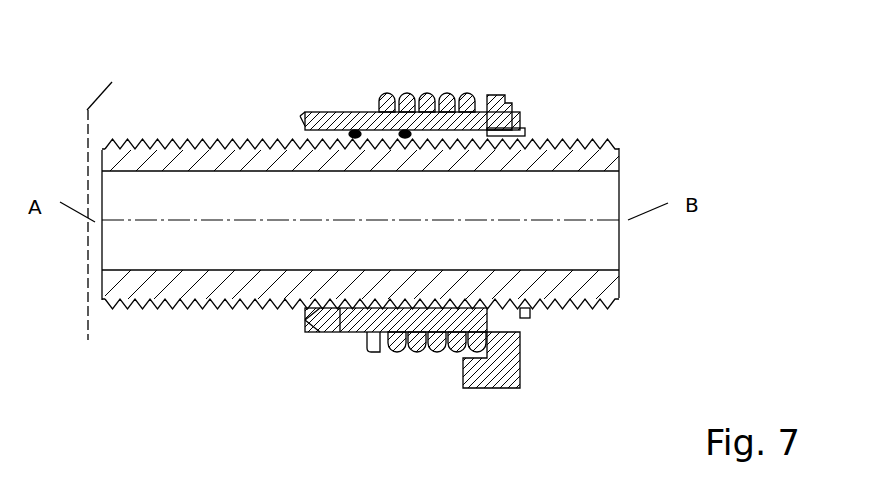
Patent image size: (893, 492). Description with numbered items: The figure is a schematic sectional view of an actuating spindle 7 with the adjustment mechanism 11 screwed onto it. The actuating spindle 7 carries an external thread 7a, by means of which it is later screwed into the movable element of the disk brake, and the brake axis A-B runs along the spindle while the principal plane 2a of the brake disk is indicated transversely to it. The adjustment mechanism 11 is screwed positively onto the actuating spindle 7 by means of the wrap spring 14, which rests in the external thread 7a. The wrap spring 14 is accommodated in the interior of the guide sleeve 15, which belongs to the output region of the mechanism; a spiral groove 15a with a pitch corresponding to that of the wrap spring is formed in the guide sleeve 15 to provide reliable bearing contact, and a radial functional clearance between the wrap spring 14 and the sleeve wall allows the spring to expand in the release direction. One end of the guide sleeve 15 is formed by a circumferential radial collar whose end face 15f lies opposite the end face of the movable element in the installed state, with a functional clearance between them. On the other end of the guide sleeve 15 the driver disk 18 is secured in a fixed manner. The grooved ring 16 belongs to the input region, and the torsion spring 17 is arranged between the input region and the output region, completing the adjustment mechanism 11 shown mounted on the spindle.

The principal plane of the brake disk 2a is at (120, 203).
The actuating spindle 7 is at (140, 160).
The external thread 7a is at (562, 142).
The adjustment mechanism 11 is at (385, 77).
The wrap spring 14 is at (352, 132).
The guide sleeve 15 is at (305, 330).
The spiral groove 15a is at (330, 333).
The end face 15f is at (305, 118).
The grooved ring 16 is at (366, 334).
The torsion spring 17 is at (425, 98).
The driver disk 18 is at (500, 110).